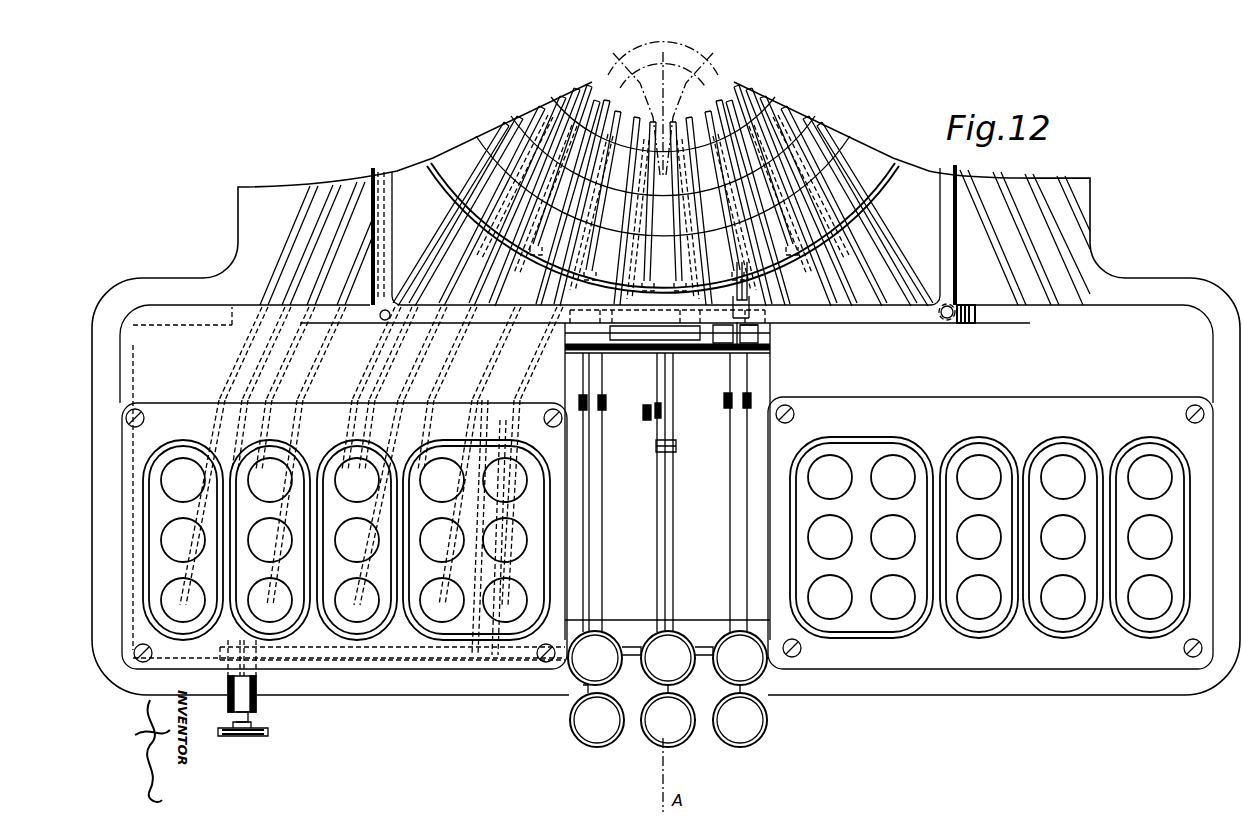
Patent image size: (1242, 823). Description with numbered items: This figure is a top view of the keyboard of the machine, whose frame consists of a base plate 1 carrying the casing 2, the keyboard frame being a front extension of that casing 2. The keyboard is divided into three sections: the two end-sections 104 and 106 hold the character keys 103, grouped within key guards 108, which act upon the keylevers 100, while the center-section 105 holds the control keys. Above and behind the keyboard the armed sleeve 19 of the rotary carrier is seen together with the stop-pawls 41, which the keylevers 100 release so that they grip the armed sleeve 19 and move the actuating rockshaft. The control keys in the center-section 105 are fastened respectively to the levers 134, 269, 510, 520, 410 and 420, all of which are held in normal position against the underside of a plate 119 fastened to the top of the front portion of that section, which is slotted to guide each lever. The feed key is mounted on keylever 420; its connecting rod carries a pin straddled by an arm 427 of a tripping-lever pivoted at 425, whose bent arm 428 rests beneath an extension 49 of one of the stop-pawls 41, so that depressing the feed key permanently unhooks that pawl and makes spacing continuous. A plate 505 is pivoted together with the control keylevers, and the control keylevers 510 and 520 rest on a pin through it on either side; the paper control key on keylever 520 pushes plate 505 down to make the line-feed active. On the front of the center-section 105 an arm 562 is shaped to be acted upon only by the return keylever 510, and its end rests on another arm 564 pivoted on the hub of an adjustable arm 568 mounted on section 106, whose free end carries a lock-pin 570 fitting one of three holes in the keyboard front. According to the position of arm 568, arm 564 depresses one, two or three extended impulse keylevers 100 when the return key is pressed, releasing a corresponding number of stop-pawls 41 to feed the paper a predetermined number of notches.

The base plate 1 is at (1083, 220).
The casing 2 is at (947, 172).
The armed sleeve 19 is at (688, 70).
The stop-pawls 41 is at (741, 93).
The extension 49 is at (740, 262).
The keylevers 100 is at (286, 258).
The keys 103 is at (264, 532).
The end-section 104 is at (990, 524).
The center-section 105 is at (667, 475).
The end-section 106 is at (344, 525).
The key guards 108 is at (666, 525).
The plate 119 is at (621, 630).
The lever 134 is at (579, 551).
The lever 269 is at (596, 518).
The lever 410 is at (731, 580).
The keylever 420 is at (746, 580).
The pivot 425 is at (762, 340).
The arm 427 is at (734, 373).
The bent arm 428 is at (744, 297).
The plate 505 is at (668, 418).
The control keylever 510 is at (658, 532).
The control keylever 520 is at (671, 532).
The arm 562 is at (701, 648).
The arm 564 is at (410, 652).
The adjustable arm 568 is at (258, 693).
The lock-pin 570 is at (253, 723).